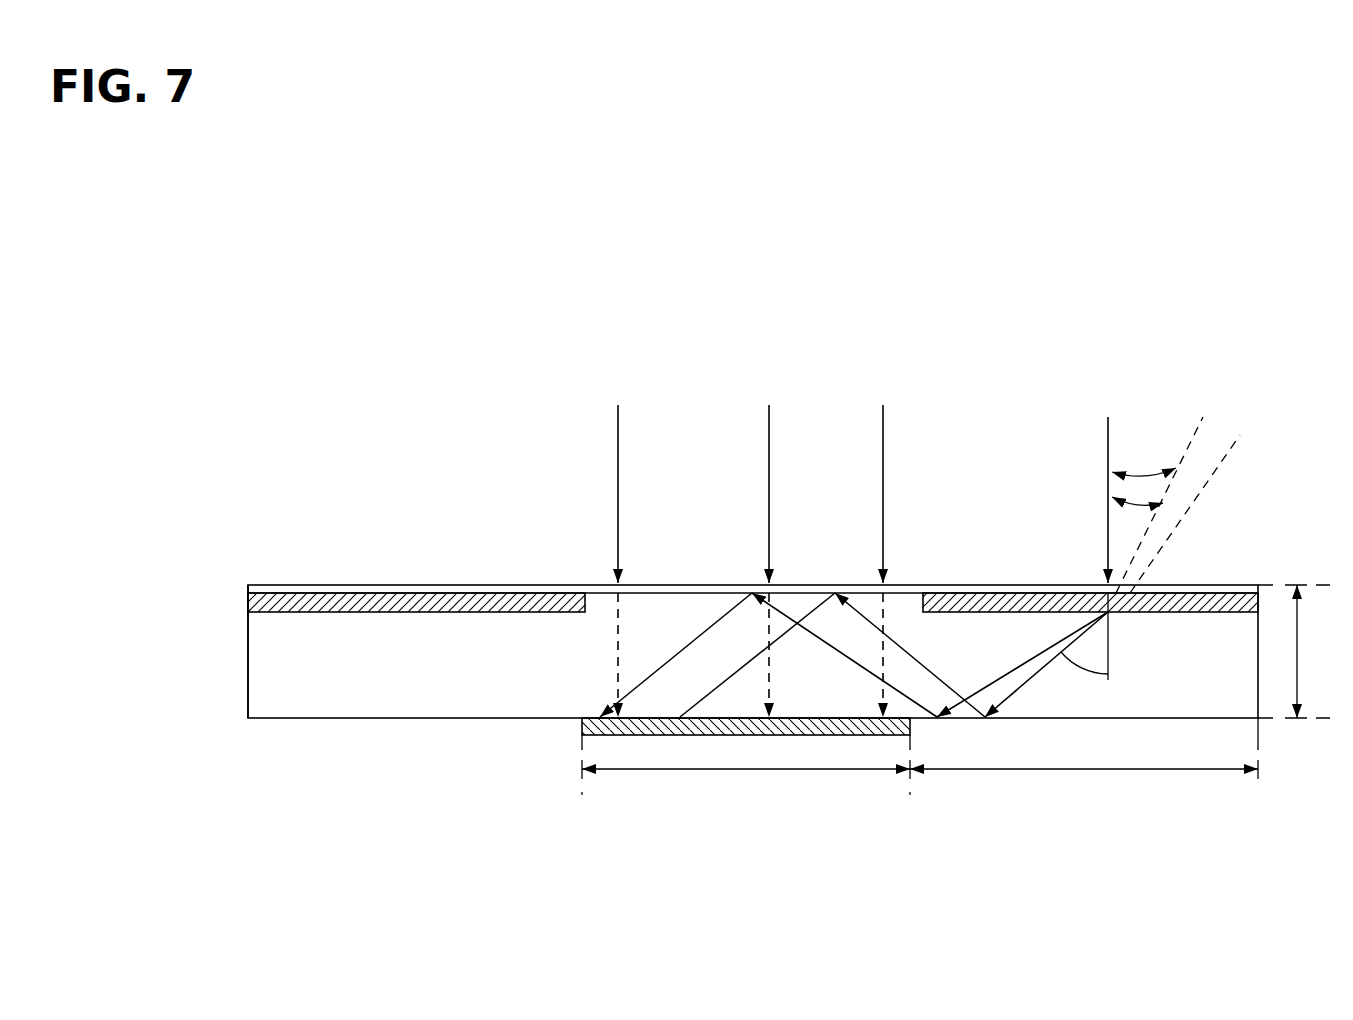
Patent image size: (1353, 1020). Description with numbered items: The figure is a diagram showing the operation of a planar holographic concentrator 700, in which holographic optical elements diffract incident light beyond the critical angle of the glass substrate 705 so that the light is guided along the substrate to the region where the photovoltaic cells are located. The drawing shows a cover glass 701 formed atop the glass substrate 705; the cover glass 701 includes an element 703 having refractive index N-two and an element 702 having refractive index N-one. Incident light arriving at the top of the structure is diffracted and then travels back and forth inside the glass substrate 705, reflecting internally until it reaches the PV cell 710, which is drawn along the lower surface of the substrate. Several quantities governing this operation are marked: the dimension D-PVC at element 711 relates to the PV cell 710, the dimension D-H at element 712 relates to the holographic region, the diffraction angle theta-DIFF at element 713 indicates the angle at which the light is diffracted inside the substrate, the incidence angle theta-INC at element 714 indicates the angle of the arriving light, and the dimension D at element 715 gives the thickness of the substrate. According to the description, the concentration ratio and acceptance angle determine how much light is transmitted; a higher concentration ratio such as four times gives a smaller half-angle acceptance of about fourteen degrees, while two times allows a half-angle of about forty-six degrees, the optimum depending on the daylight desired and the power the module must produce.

The planar holographic concentrator 700 is at (210, 188).
The cover glass 701 is at (751, 573).
The refractive index N1 region 702 is at (436, 584).
The refractive index N2 region 703 is at (368, 661).
The glass substrate 705 is at (277, 662).
The PV cell 710 is at (646, 714).
The dimension D_PVC 711 is at (746, 772).
The dimension D_H 712 is at (1084, 764).
The diffraction angle theta_DIFF 713 is at (1128, 712).
The incidence angle theta_INC 714 is at (1165, 451).
The dimension D 715 is at (1352, 666).